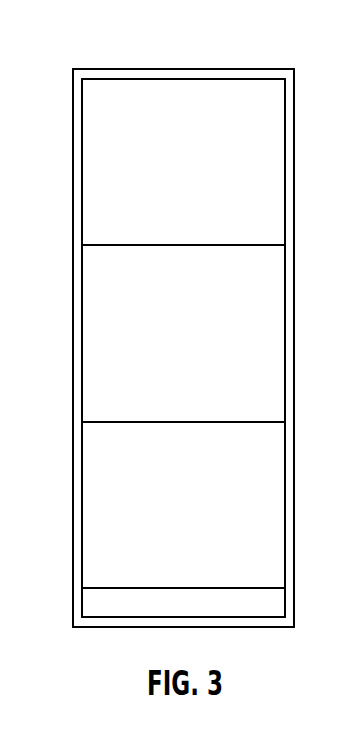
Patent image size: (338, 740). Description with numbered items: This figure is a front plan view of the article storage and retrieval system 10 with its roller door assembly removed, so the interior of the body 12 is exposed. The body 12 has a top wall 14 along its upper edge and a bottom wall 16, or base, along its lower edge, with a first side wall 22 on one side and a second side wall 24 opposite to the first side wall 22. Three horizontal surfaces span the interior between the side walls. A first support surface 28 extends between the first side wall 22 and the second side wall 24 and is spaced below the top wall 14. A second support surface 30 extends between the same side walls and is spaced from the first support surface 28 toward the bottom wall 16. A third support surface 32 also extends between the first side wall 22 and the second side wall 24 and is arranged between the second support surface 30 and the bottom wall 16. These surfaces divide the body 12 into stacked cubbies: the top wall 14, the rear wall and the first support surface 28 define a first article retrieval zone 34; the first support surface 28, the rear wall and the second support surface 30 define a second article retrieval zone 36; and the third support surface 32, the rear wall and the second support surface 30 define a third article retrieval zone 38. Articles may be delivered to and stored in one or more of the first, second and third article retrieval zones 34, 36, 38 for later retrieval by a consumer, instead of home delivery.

The article storage and retrieval system 10 is at (95, 35).
The body 12 is at (73, 132).
The top wall 14 is at (183, 68).
The bottom wall 16 is at (229, 628).
The first side wall 22 is at (72, 332).
The second side wall 24 is at (295, 318).
The first support surface 28 is at (181, 244).
The second support surface 30 is at (183, 421).
The third support surface 32 is at (184, 587).
The first article retrieval zone 34 is at (197, 176).
The second article retrieval zone 36 is at (198, 346).
The third article retrieval zone 38 is at (198, 518).